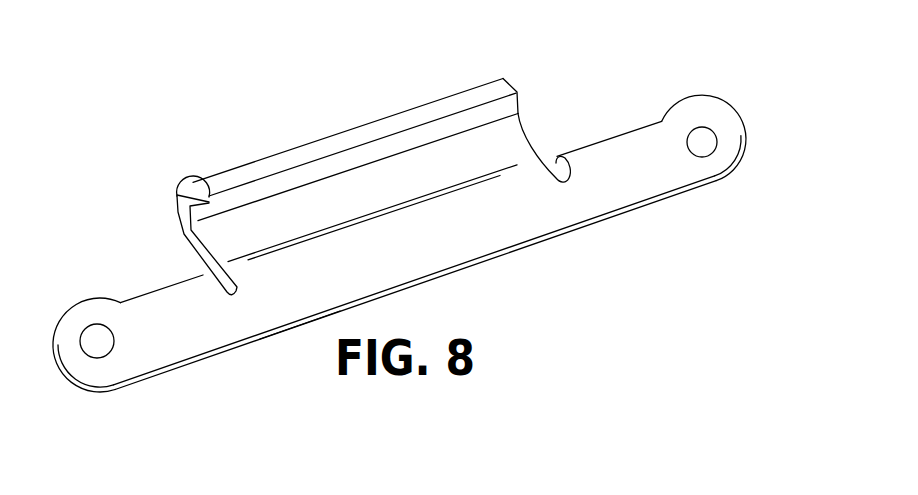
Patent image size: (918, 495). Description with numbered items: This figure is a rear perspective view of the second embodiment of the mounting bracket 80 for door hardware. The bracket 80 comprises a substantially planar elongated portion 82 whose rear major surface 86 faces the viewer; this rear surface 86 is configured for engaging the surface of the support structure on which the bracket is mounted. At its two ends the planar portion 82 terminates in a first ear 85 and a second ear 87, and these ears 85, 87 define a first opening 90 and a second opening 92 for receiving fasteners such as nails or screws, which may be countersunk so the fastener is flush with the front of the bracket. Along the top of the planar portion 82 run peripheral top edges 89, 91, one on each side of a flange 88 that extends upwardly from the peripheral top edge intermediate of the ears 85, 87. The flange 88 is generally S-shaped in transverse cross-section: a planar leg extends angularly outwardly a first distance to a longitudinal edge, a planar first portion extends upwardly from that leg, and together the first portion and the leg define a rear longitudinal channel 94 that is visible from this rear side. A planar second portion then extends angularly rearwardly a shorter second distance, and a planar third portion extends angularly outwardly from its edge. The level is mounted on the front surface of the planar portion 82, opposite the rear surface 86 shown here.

The mounting bracket 80 is at (384, 232).
The planar elongated portion 82 is at (295, 290).
The first ear 85 is at (703, 95).
The rear major surface 86 is at (552, 218).
The second ear 87 is at (67, 310).
The flange 88 is at (314, 141).
The peripheral top edge 89 is at (613, 137).
The first opening 90 is at (688, 142).
The peripheral top edge 91 is at (123, 301).
The second opening 92 is at (93, 355).
The rear longitudinal channel 94 is at (177, 193).